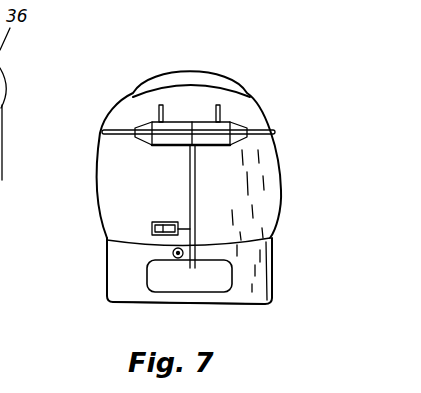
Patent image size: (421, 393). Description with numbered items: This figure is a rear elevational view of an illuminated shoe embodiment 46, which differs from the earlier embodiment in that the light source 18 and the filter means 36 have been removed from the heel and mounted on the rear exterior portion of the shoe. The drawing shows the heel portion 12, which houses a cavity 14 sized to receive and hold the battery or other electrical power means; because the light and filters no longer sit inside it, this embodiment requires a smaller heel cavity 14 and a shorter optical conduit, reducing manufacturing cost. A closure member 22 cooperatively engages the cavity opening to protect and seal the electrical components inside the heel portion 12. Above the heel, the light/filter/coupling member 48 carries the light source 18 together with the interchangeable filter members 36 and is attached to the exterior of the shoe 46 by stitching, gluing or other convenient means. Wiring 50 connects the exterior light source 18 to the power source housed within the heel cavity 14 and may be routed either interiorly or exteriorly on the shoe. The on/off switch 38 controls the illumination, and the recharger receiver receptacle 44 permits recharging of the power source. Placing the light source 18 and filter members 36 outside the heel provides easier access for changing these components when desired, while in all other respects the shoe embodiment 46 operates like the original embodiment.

The heel portion 12 is at (120, 292).
The cavity 14 is at (195, 304).
The light source 18 is at (180, 122).
The closure member 22 is at (210, 282).
The filter means 36 is at (159, 112).
The on/off switch 38 is at (150, 222).
The recharger receiver receptacle 44 is at (173, 253).
The shoe embodiment 46 is at (297, 62).
The light/filter/coupling member 48 is at (213, 147).
The wiring 50 is at (200, 230).